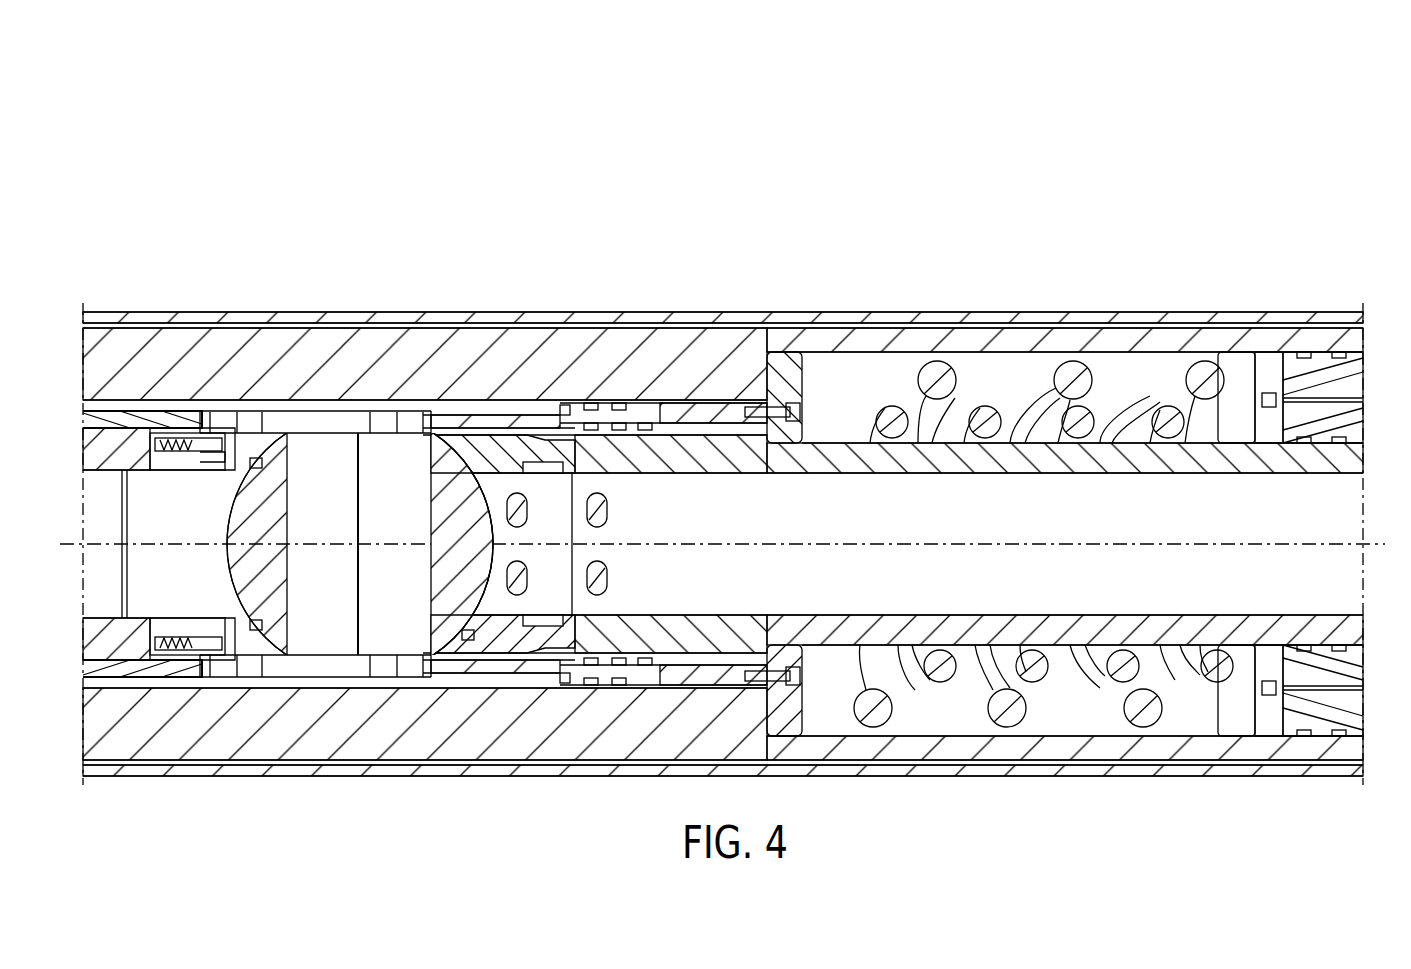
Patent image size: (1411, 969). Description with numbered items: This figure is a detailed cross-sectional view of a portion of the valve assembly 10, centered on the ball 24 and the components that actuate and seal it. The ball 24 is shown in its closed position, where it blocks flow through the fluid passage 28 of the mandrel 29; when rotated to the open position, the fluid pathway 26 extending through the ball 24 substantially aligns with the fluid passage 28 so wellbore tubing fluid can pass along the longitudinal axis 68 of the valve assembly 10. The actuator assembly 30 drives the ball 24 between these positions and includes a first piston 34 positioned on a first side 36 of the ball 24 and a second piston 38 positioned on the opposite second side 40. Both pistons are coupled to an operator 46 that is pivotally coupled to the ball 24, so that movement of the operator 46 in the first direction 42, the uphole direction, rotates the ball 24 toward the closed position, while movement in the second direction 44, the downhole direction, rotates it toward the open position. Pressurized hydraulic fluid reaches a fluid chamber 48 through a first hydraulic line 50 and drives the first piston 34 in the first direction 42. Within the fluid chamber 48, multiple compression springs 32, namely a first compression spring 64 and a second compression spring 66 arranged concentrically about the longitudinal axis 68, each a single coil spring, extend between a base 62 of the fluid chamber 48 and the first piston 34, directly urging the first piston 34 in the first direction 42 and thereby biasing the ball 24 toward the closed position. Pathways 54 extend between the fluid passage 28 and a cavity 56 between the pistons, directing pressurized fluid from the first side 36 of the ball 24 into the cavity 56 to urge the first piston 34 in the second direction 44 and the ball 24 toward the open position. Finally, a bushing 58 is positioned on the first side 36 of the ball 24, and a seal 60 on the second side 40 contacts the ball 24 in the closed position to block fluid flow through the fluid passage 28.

The valve assembly 10 is at (735, 220).
The ball 24 is at (258, 520).
The fluid pathway 26 is at (432, 467).
The fluid passage 28 is at (852, 470).
The mandrel 29 is at (722, 463).
The actuator assembly 30 is at (510, 285).
The compression springs 32 is at (1088, 290).
The first piston 34 is at (647, 412).
The first side 36 is at (773, 285).
The second piston 38 is at (142, 420).
The second side 40 is at (205, 278).
The first direction 42 is at (967, 200).
The second direction 44 is at (612, 200).
The operator 46 is at (316, 420).
The fluid chamber 48 is at (992, 388).
The first hydraulic line 50 is at (1330, 392).
The pathway 54 is at (610, 573).
The cavity 56 is at (362, 664).
The bushing 58 is at (468, 642).
The seal 60 is at (257, 623).
The base 62 is at (1252, 378).
The first compression spring 64 is at (1072, 376).
The second compression spring 66 is at (1072, 424).
The longitudinal axis 68 is at (903, 548).